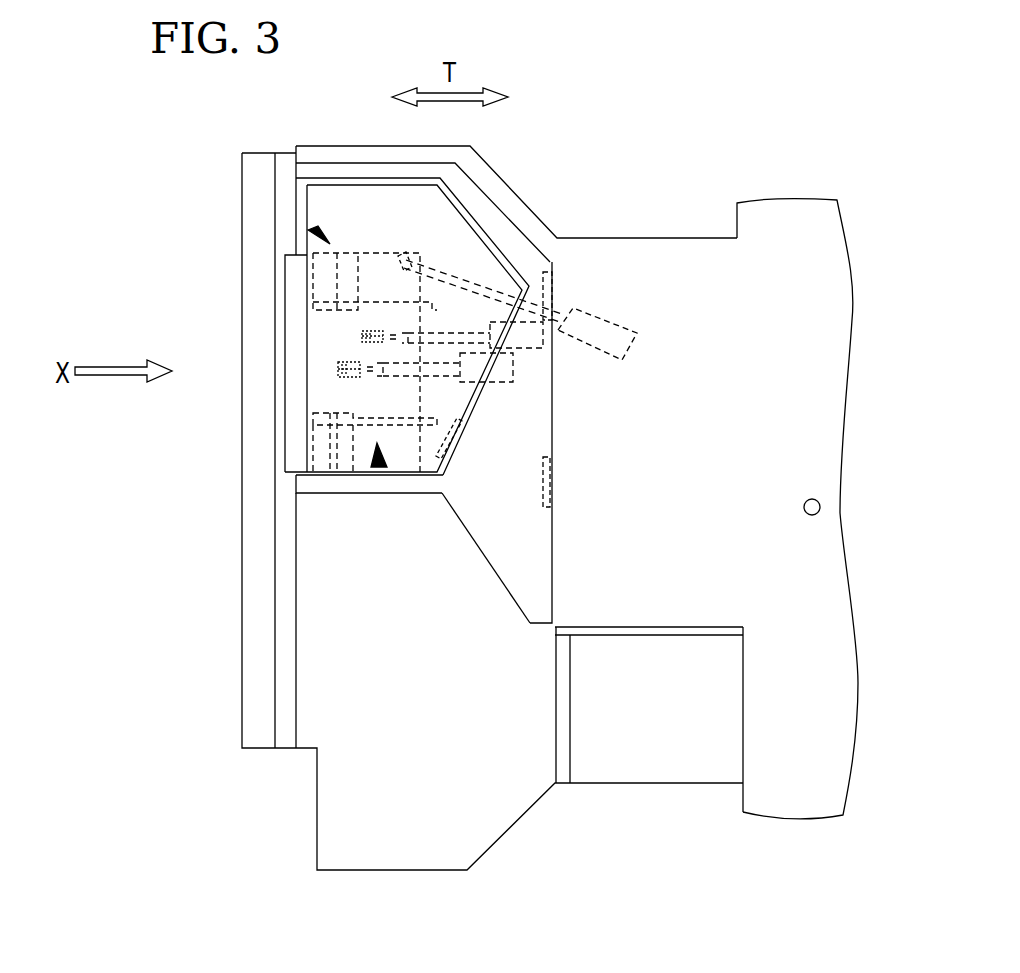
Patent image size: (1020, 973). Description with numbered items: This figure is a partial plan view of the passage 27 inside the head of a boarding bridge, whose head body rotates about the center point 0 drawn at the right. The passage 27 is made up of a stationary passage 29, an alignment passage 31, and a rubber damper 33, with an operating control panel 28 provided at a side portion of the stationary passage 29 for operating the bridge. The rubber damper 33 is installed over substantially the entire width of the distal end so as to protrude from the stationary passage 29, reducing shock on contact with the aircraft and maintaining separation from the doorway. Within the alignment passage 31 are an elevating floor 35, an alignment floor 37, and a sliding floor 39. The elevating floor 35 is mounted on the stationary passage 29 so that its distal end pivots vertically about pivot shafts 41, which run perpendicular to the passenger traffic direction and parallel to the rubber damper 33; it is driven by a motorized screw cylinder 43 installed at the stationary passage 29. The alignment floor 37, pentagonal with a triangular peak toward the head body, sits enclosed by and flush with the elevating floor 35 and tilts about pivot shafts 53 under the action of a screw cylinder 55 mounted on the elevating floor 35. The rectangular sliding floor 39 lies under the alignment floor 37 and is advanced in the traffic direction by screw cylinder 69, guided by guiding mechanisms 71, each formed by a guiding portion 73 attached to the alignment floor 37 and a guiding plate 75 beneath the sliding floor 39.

The center point 0 is at (812, 498).
The passage 27 is at (688, 267).
The operating control panel 28 is at (647, 762).
The stationary passage 29 is at (355, 797).
The alignment passage 31 is at (497, 203).
The rubber damper 33 is at (243, 518).
The elevating floor 35 is at (497, 532).
The alignment floor 37 is at (337, 195).
The sliding floor 39 is at (298, 352).
The pivot shafts 41 is at (552, 280).
The screw cylinder 43 is at (613, 357).
The pivot shafts 53 is at (507, 317).
The screw cylinder 55 is at (532, 350).
The screw cylinder 69 is at (497, 384).
The guiding mechanisms 71 is at (306, 229).
The guiding portion 73 is at (307, 273).
The guiding plate 75 is at (378, 296).